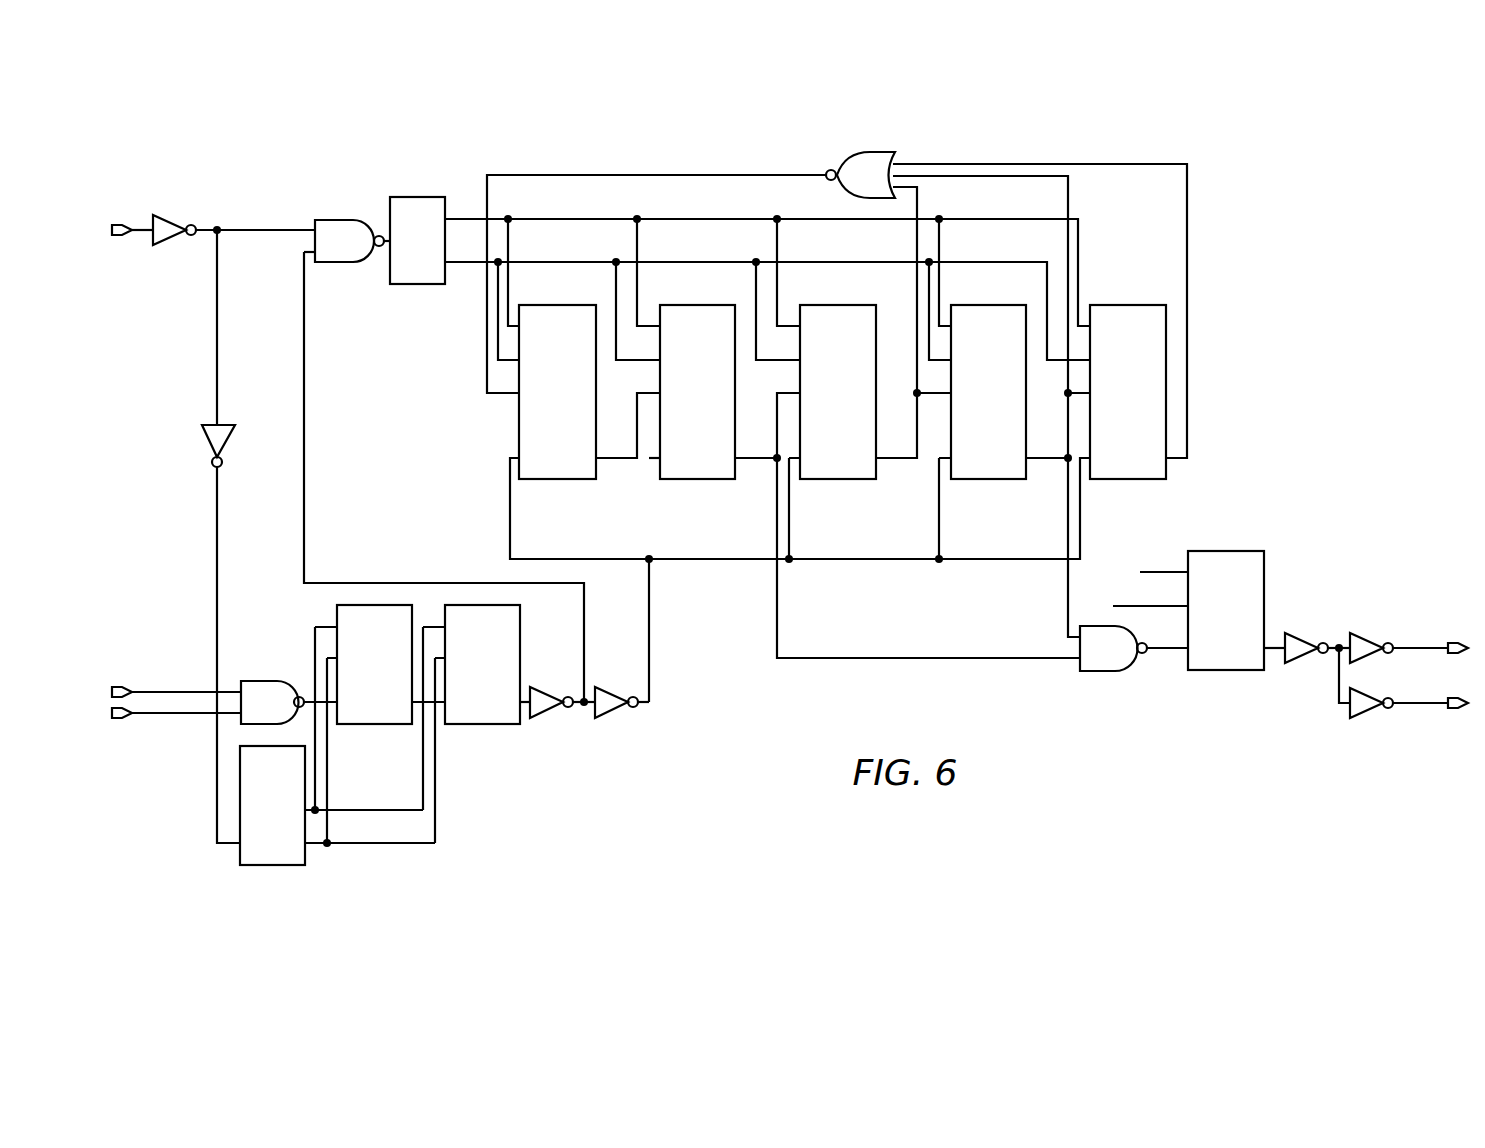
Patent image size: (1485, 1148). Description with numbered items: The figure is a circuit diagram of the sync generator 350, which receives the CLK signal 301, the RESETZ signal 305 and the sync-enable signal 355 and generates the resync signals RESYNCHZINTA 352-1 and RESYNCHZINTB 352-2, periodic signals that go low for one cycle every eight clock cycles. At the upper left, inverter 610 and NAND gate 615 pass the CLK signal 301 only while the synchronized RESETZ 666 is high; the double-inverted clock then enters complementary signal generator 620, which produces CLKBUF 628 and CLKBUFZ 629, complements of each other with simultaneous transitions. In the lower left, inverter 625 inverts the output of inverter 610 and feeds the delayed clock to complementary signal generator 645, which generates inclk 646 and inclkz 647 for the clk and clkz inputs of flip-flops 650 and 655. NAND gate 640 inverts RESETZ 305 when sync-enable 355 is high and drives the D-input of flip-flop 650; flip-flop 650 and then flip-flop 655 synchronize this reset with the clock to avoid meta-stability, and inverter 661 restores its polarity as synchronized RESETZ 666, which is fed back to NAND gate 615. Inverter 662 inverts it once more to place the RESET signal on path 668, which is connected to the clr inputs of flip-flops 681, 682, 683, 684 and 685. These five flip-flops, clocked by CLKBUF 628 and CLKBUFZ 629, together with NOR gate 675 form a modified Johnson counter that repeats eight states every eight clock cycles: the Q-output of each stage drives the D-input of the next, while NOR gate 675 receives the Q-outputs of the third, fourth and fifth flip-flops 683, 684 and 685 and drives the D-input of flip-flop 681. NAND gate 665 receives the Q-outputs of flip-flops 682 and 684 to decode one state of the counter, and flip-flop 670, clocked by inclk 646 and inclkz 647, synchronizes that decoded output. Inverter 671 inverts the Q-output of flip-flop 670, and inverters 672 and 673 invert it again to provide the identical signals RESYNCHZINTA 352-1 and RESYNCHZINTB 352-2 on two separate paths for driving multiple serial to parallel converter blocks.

The sync generator 350 is at (1250, 284).
The CLK signal 301 is at (135, 228).
The RESETZ signal 305 is at (150, 690).
The sync-enable signal 355 is at (150, 718).
The RESYNCHZINTA signal 352-1 is at (1425, 646).
The RESYNCHZINTB signal 352-2 is at (1425, 706).
The inverter 610 is at (175, 228).
The NAND gate 615 is at (338, 218).
The complementary signal generator 620 is at (418, 196).
The inverter 625 is at (205, 440).
The CLKBUF signal 628 is at (462, 216).
The CLKBUFZ signal 629 is at (462, 266).
The NAND gate 640 is at (262, 680).
The complementary signal generator 645 is at (270, 867).
The inclk signal 646 is at (385, 808).
The inclkz signal 647 is at (385, 846).
The flip-flop 650 is at (335, 612).
The flip-flop 655 is at (485, 725).
The inverter 661 is at (548, 716).
The inverter 662 is at (613, 716).
The NAND gate 665 is at (1103, 672).
The synchronized RESETZ signal 666 is at (443, 582).
The RESET signal path 668 is at (652, 622).
The flip-flop 670 is at (1228, 672).
The inverter 671 is at (1308, 633).
The inverter 672 is at (1368, 628).
The inverter 673 is at (1365, 720).
The NOR gate 675 is at (875, 152).
The flip-flop 681 is at (556, 480).
The flip-flop 682 is at (698, 480).
The flip-flop 683 is at (838, 480).
The flip-flop 684 is at (988, 480).
The flip-flop 685 is at (1130, 305).